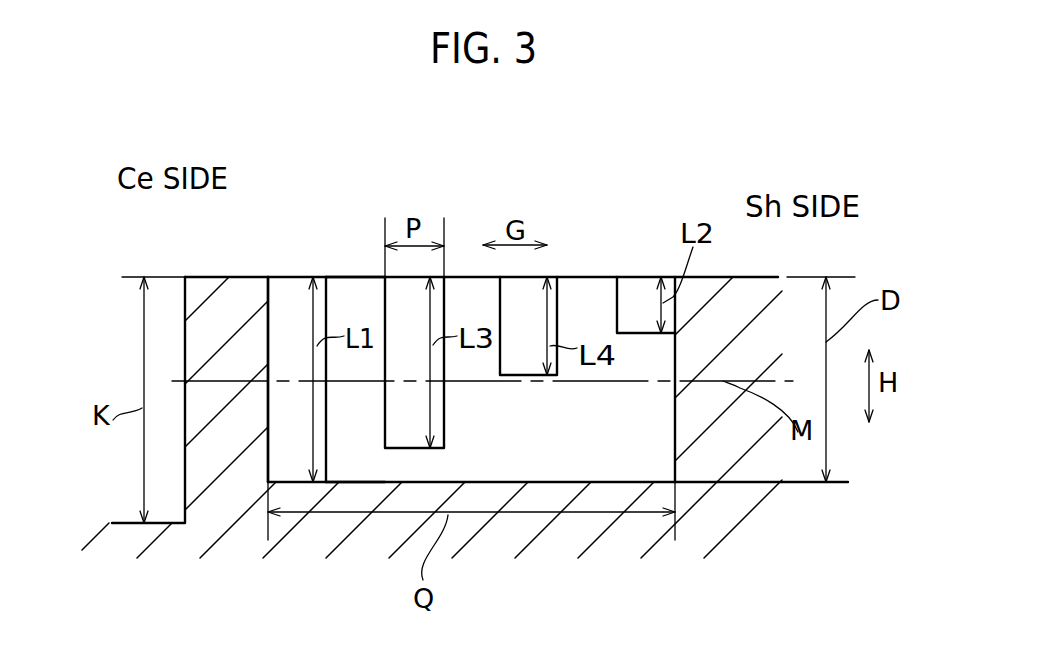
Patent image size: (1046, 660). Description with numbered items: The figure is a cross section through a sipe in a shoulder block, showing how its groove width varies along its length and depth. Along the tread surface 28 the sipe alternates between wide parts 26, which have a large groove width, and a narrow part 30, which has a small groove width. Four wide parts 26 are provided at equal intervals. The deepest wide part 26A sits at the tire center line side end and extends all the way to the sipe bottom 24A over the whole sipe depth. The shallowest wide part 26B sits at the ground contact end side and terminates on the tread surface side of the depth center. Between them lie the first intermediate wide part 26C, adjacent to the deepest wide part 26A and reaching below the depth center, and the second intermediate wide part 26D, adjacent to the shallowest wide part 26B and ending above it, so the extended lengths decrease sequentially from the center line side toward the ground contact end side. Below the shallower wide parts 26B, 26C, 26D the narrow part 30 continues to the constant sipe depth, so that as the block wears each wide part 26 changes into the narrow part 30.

The sipe bottom 24A is at (626, 482).
The wide part 26 is at (491, 314).
The deepest wide part 26A is at (285, 290).
The shallowest wide part 26B is at (638, 277).
The first intermediate wide part 26C is at (410, 292).
The second intermediate wide part 26D is at (530, 287).
The tread surface 28 is at (745, 277).
The narrow part 30 is at (357, 288).